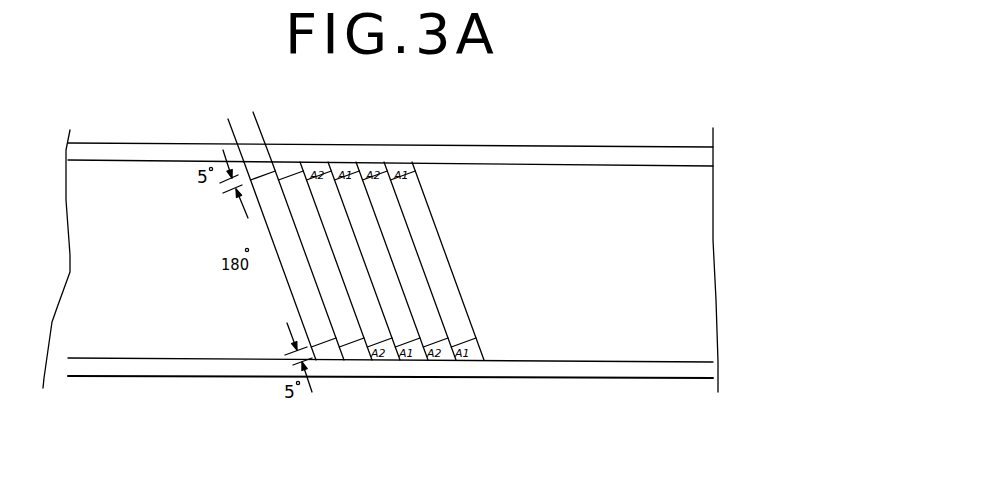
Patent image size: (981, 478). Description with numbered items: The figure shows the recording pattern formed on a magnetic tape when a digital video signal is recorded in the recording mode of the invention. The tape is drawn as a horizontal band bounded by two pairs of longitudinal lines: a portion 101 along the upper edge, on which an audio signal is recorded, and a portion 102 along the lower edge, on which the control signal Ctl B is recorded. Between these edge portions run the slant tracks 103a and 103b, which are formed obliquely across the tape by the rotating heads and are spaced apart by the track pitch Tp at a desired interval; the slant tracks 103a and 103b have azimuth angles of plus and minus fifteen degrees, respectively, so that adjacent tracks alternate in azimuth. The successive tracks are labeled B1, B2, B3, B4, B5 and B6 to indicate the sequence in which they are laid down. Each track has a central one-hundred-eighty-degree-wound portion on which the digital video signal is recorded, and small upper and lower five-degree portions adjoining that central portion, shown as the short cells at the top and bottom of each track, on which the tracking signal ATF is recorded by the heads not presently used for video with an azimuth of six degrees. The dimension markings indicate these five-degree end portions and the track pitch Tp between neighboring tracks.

The portion above the slanted tracks 101 is at (578, 160).
The portion below the slanted tracks 102 is at (630, 370).
The slant track 103a is at (308, 308).
The slant track 103b is at (346, 308).
The track B1 is at (294, 261).
The track B2 is at (336, 261).
The track B3 is at (364, 261).
The track B4 is at (392, 261).
The track B5 is at (420, 261).
The track B6 is at (448, 261).
The track pitch Tp is at (213, 138).